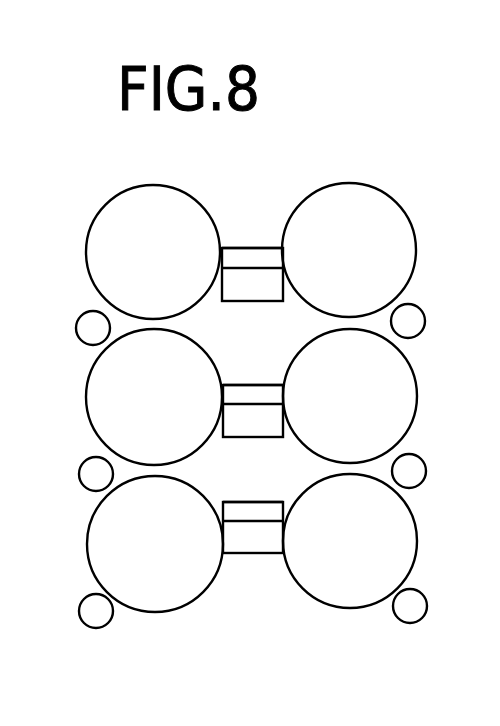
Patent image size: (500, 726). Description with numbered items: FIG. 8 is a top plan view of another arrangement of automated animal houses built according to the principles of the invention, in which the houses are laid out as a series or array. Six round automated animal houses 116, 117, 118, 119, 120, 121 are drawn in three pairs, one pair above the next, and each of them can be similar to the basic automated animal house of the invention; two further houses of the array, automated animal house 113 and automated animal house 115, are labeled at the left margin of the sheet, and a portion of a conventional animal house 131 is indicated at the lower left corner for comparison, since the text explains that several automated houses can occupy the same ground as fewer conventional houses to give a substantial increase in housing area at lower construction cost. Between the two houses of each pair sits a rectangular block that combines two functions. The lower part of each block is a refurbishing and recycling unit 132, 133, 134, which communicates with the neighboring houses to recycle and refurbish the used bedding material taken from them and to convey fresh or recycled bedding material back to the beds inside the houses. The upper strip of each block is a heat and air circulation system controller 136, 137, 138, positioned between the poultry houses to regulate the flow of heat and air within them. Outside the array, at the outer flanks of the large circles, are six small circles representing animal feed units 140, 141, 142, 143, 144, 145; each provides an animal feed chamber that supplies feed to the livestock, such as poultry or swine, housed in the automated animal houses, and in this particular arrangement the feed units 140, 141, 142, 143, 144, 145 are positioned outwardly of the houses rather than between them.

The automated animal house 113 is at (20, 357).
The automated animal house 115 is at (0, 562).
The automated animal house 116 is at (145, 186).
The automated animal house 117 is at (340, 185).
The automated animal house 118 is at (86, 398).
The automated animal house 119 is at (418, 384).
The automated animal house 120 is at (92, 521).
The automated animal house 121 is at (416, 531).
The conventional animal house 131 is at (18, 679).
The refurbishing and recycling unit 132 is at (248, 301).
The refurbishing and recycling unit 133 is at (268, 437).
The refurbishing and recycling unit 134 is at (256, 553).
The heat and air circulation system controller 136 is at (262, 215).
The heat and air circulation system controller 137 is at (265, 368).
The heat and air circulation system controller 138 is at (268, 483).
The animal feed unit 140 is at (82, 312).
The animal feed unit 141 is at (410, 305).
The animal feed unit 142 is at (86, 463).
The animal feed unit 143 is at (416, 456).
The animal feed unit 144 is at (97, 628).
The animal feed unit 145 is at (412, 623).